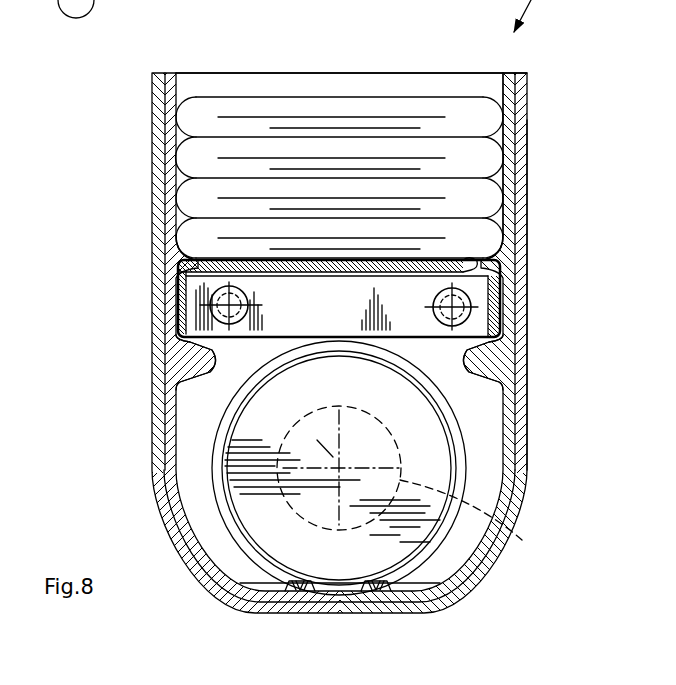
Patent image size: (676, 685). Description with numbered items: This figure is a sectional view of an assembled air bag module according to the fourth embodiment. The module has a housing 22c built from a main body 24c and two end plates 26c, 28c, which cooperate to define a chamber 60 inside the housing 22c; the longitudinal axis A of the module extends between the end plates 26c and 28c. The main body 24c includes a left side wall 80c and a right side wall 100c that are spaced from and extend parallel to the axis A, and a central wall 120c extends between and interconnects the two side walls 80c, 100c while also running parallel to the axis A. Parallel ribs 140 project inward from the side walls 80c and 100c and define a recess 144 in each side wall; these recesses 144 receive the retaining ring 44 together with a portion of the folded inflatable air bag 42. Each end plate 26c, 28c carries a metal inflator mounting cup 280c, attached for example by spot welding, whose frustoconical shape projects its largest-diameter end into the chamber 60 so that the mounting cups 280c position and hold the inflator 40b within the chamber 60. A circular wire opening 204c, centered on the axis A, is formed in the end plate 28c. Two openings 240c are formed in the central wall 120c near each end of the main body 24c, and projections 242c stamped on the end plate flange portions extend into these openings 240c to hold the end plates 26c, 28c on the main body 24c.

The inflatable air bag 42 is at (258, 108).
The end plate 28c is at (338, 70).
The main body 24c is at (503, 70).
The housing 22c is at (524, 70).
The right side wall 100c is at (523, 118).
The end plate 26c is at (532, 166).
The left side wall 80c is at (148, 164).
The parallel ribs 140 is at (196, 247).
The recess 144 is at (205, 306).
The retaining ring 44 is at (490, 283).
The chamber 60 is at (475, 393).
The inflator 40b is at (460, 440).
The inflator mounting cup 280c is at (214, 423).
The wire opening 204c is at (522, 540).
The openings 240c is at (370, 590).
The projections 242c is at (300, 612).
The central wall 120c is at (474, 581).